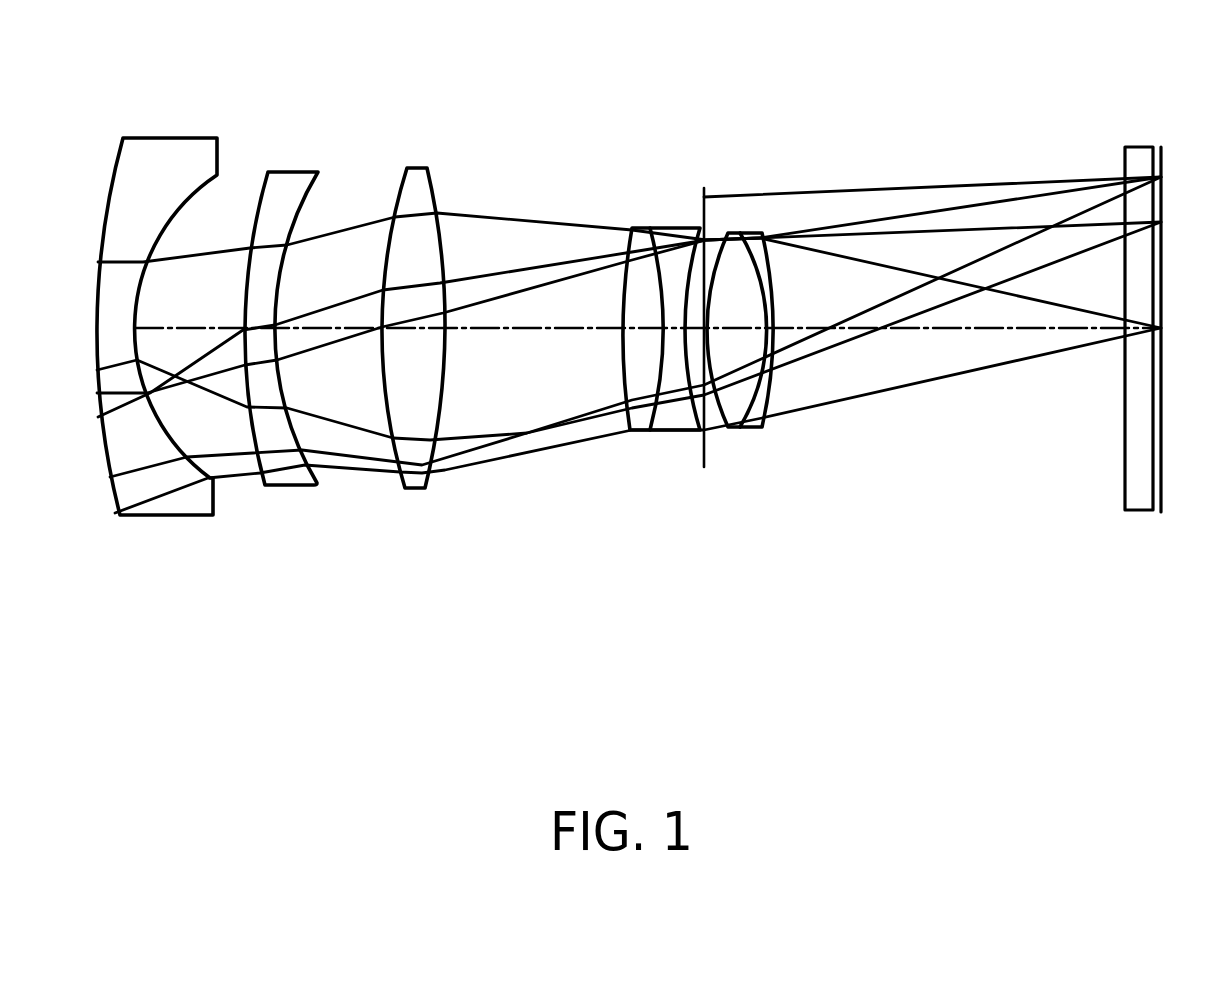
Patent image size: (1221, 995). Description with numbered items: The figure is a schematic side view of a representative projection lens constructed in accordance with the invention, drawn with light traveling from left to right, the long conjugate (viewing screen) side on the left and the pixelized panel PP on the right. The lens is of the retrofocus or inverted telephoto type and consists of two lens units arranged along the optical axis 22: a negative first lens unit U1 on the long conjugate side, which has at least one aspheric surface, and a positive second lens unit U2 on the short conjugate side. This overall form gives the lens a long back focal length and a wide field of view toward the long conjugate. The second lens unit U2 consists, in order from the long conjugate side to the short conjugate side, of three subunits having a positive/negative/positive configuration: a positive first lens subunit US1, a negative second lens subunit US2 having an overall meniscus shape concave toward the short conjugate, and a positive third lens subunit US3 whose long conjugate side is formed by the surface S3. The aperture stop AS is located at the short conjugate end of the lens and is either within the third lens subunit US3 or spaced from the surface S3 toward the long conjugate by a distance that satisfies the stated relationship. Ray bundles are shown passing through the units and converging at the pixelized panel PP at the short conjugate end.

The first lens unit U1 is at (332, 120).
The second lens unit U2 is at (579, 334).
The first lens subunit US1 is at (457, 515).
The second lens subunit US2 is at (692, 443).
The third lens subunit US3 is at (778, 443).
The aperture stop AS is at (704, 190).
The pixelized panel PP is at (1163, 207).
The surface S3 is at (707, 293).
The optical axis 22 is at (540, 330).